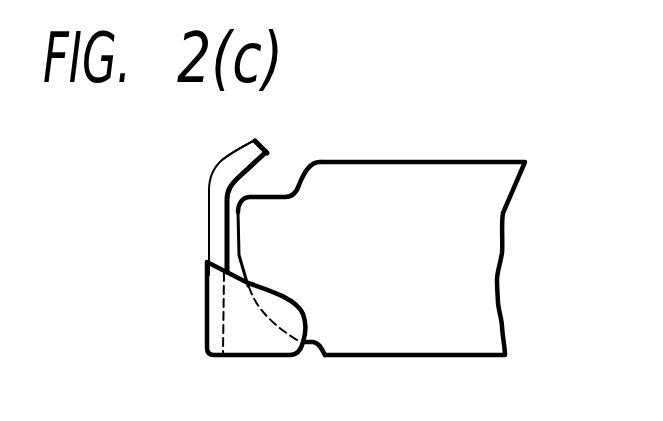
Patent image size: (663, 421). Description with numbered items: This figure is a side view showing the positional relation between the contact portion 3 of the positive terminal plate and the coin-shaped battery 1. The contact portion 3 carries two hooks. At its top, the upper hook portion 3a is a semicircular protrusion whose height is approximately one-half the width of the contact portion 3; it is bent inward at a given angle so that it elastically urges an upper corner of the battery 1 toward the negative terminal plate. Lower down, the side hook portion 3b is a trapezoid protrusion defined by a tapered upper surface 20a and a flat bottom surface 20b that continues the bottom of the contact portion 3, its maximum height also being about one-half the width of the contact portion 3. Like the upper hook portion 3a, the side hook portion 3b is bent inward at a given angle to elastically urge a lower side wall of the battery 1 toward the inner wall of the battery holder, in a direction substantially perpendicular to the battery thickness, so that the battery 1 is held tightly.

The battery 1 is at (485, 300).
The contact portion 3 is at (208, 253).
The upper hook portion 3a is at (233, 156).
The side hook portion 3b is at (248, 347).
The tapered upper surface 20a is at (268, 292).
The flat bottom surface 20b is at (268, 357).